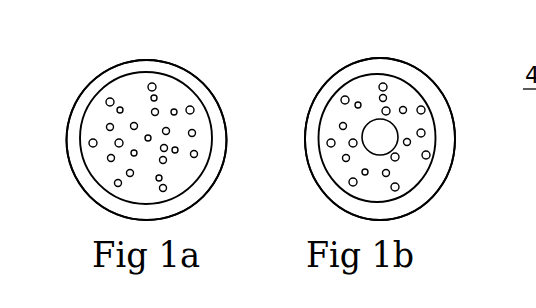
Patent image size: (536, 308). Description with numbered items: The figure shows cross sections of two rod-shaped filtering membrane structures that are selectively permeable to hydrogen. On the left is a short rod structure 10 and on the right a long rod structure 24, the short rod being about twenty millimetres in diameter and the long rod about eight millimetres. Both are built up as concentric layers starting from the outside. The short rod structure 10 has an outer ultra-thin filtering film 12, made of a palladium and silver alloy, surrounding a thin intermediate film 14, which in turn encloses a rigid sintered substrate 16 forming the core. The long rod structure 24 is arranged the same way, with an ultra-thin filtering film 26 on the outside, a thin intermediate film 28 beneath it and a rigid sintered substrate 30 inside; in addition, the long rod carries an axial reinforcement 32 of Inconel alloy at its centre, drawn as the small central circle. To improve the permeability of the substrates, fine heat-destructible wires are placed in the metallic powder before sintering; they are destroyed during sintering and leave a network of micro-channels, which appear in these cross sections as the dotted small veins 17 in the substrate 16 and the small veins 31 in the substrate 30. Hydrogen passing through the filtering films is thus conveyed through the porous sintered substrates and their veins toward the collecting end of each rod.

In FIG. 1A, the short rod structure 10 is at (72, 90).
In FIG. 1A, the ultra-thin filtering film 12 is at (143, 60).
In FIG. 1A, the thin intermediate film 14 is at (190, 82).
In FIG. 1A, the rigid sintered substrate 16 is at (195, 123).
In FIG. 1A, the small veins 17 is at (159, 176).
In FIG. 1B, the long rod structure 24 is at (310, 89).
In FIG. 1B, the ultra-thin filtering film 26 is at (405, 60).
In FIG. 1B, the thin intermediate film 28 is at (428, 87).
In FIG. 1B, the rigid sintered substrate 30 is at (428, 141).
In FIG. 1B, the small veins 31 is at (403, 188).
In FIG. 1B, the axial reinforcement 32 is at (375, 137).